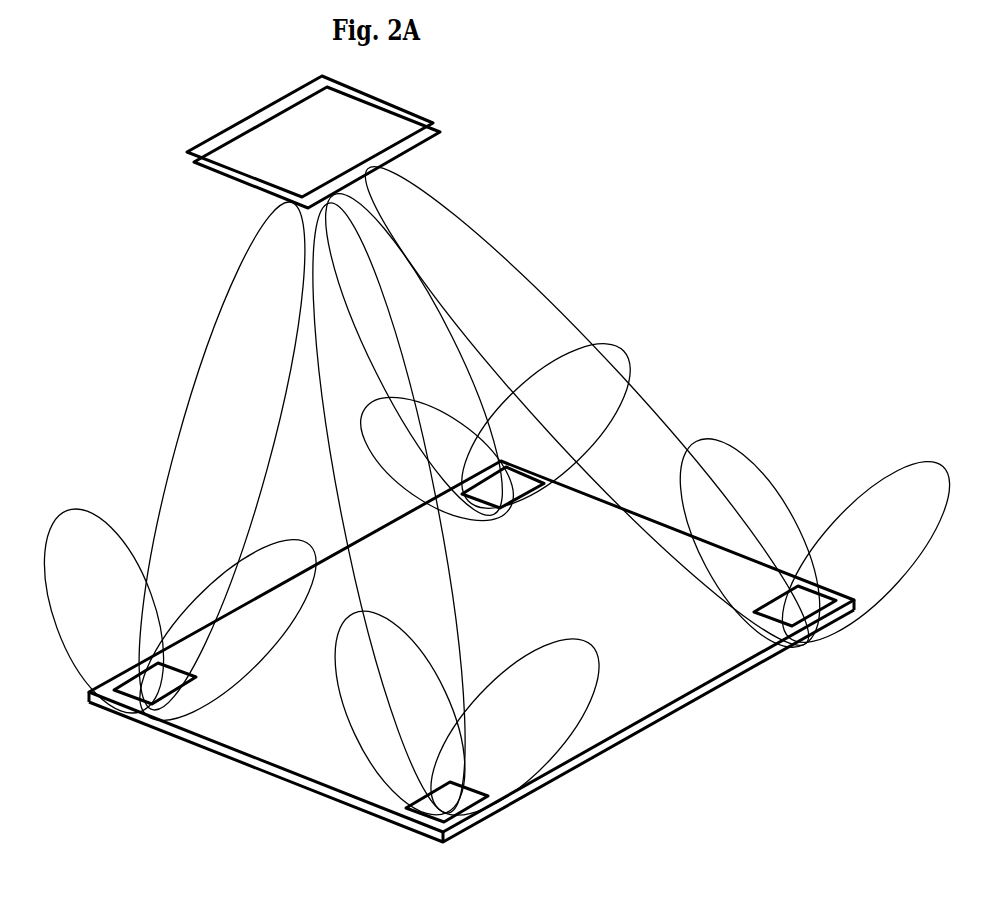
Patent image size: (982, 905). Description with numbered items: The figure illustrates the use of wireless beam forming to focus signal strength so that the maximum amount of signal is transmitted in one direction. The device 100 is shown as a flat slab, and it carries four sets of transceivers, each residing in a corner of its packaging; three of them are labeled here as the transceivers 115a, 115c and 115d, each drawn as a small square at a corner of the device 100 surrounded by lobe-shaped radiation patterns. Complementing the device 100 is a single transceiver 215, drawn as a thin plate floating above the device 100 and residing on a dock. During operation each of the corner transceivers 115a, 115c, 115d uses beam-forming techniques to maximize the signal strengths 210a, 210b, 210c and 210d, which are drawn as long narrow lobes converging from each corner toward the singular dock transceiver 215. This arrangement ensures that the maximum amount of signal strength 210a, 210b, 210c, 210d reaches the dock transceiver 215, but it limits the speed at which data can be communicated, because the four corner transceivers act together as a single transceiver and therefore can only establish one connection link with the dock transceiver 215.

The device 100 is at (663, 692).
The transceiver 215 is at (338, 110).
The signal strength 210a is at (178, 438).
The signal strength 210b is at (445, 543).
The signal strength 210c is at (430, 270).
The signal strength 210d is at (638, 393).
The transceiver 115a is at (123, 700).
The transceiver 115c is at (530, 492).
The transceiver 115d is at (818, 612).